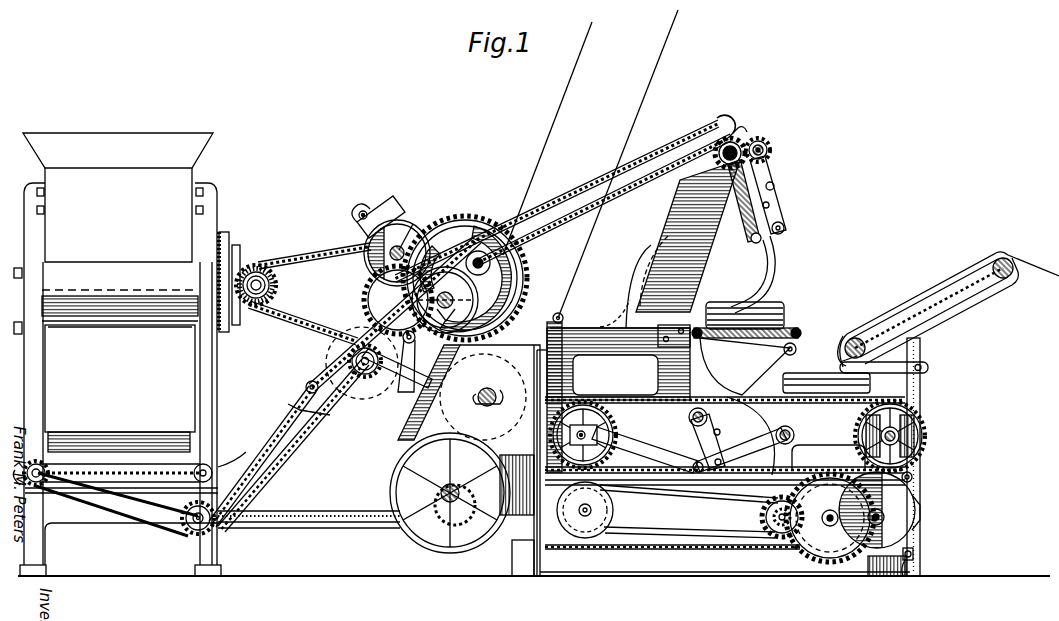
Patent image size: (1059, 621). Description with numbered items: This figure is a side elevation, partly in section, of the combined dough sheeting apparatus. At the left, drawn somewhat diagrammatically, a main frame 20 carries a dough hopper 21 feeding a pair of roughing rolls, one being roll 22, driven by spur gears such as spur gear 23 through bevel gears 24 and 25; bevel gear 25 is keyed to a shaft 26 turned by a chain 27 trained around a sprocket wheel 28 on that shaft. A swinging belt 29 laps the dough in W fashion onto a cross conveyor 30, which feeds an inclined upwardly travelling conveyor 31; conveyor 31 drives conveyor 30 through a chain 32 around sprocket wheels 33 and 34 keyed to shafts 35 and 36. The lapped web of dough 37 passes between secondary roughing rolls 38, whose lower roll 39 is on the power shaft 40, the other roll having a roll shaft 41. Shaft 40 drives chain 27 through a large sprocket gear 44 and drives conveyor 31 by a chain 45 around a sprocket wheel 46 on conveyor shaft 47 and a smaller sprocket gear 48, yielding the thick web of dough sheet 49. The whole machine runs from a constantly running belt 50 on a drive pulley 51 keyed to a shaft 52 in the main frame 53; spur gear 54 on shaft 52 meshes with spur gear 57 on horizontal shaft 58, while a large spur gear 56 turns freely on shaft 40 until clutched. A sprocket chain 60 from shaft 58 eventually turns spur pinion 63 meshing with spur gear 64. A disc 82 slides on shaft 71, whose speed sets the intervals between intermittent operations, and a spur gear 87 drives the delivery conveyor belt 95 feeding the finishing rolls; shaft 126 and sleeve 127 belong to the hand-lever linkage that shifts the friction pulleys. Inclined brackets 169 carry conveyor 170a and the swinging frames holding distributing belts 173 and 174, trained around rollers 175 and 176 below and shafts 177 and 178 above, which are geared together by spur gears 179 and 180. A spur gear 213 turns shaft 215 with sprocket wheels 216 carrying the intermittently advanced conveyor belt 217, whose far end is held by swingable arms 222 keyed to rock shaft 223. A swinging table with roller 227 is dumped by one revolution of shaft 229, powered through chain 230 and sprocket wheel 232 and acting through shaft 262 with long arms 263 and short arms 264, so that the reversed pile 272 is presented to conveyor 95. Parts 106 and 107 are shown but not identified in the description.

The main frame 20 is at (219, 428).
The dough hopper 21 is at (114, 140).
The roughing roll 22 is at (92, 283).
The spur gear 23 is at (226, 232).
The bevel gear 24 is at (243, 256).
The bevel gear 25 is at (273, 262).
The shaft 26 is at (276, 283).
The chain 27 is at (268, 314).
The sprocket wheel 28 is at (276, 295).
The swinging belt 29 is at (120, 388).
The cross conveyor 30 is at (135, 460).
The inclined upwardly travelling conveyor 31 is at (312, 384).
The chain 32 is at (170, 528).
The sprocket wheel 33 is at (192, 534).
The sprocket wheel 34 is at (15, 470).
The shaft 35 is at (218, 530).
The shaft 36 is at (52, 458).
The sheet or web of dough 37 is at (290, 404).
The secondary roughing rolls 38 is at (392, 197).
The lower roll 39 is at (465, 220).
The shaft 40 is at (481, 224).
The roll shaft 41 is at (413, 222).
The large sprocket gear 44 is at (492, 268).
The chain 45 is at (356, 328).
The sprocket wheel 46 is at (392, 392).
The conveyor shaft 47 is at (362, 378).
The smaller sprocket gear 48 is at (520, 290).
The web of dough sheet 49 is at (646, 165).
The constantly running belt 50 is at (598, 228).
The drive pulley 51 is at (499, 368).
The shaft 52 is at (477, 397).
The main frame 53 is at (520, 554).
The spur gear 54 is at (406, 441).
The large spur gear 56 is at (530, 300).
The spur gear 57 is at (446, 535).
The horizontal shaft 58 is at (436, 522).
The sprocket chain 60 is at (681, 540).
The spur pinion 63 is at (782, 533).
The spur gear 64 is at (836, 563).
The shaft 71 is at (884, 520).
The disc 82 is at (898, 504).
The spur gear 87 is at (922, 517).
The conveyor belt 95 is at (962, 293).
The post 106 is at (921, 349).
The bracket 107 is at (903, 349).
The shaft 126 is at (942, 616).
The sleeve 127 is at (914, 556).
The inclined upwardly extending brackets 169 is at (694, 200).
The conveyor 170a is at (596, 196).
The distributing belt 173 is at (740, 208).
The distributing belt 174 is at (779, 191).
The roller or shaft 175 is at (752, 240).
The roller or shaft 176 is at (785, 224).
The shaft 177 is at (738, 137).
The shaft 178 is at (766, 139).
The spur gear 179 is at (718, 160).
The spur gear 180 is at (771, 149).
The spur gear 213 is at (786, 312).
The shaft 215 is at (900, 440).
The sprocket wheels 216 is at (925, 435).
The conveyor belt 217 is at (618, 396).
The swingable arms 222 is at (645, 450).
The transverse rock shaft 223 is at (795, 435).
The roller 227 is at (802, 332).
The shaft 229 is at (616, 512).
The chain 230 is at (722, 540).
The sprocket wheel 232 is at (606, 540).
The shaft 262 is at (689, 417).
The long arms 263 is at (750, 372).
The short arms 264 is at (712, 417).
The pile 272 is at (800, 373).